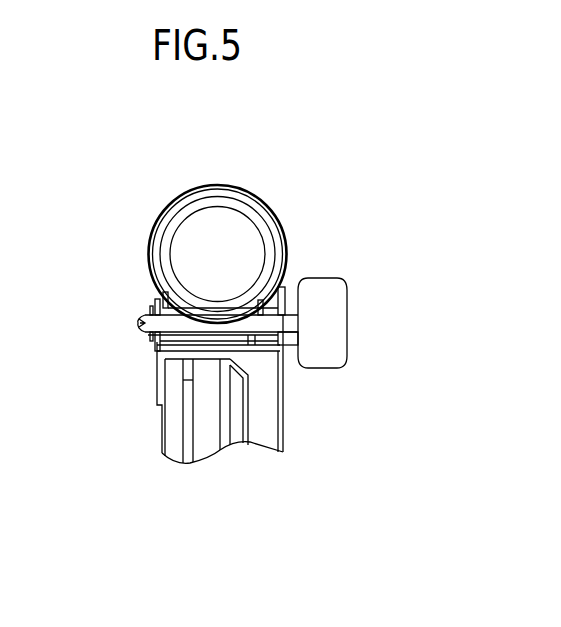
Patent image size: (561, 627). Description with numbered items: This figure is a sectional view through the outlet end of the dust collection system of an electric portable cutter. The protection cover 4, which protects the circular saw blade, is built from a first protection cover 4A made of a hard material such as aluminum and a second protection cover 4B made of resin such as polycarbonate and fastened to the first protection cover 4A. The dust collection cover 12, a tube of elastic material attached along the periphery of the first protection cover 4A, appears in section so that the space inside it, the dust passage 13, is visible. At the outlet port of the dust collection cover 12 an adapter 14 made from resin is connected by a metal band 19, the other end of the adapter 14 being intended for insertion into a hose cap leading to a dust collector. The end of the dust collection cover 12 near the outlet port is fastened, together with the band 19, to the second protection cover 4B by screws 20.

The protection cover 4 is at (220, 401).
The first protection cover 4A is at (158, 432).
The second protection cover 4B is at (288, 395).
The dust collection cover 12 is at (172, 206).
The dust passage 13 is at (187, 242).
The adapter 14 is at (170, 257).
The band 19 is at (197, 219).
The screws 20 is at (137, 337).